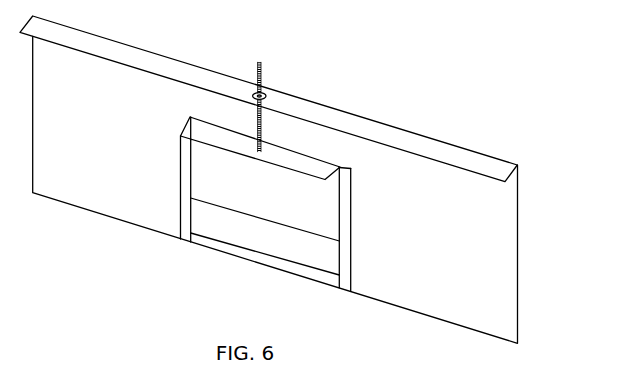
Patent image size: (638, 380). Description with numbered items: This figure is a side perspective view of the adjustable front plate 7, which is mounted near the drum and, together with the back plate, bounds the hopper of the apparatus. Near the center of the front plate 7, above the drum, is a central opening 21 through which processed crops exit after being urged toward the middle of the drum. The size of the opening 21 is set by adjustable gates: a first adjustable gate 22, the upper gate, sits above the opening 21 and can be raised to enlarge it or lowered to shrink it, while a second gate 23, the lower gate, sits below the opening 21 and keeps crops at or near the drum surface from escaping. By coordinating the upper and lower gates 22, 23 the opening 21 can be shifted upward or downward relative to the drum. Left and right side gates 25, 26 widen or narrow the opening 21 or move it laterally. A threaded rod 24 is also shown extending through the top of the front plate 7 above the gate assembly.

The front plate 7 is at (488, 222).
The central opening 21 is at (303, 243).
The first adjustable gate 22 is at (325, 195).
The second gate 23 is at (253, 257).
The threaded rod 24 is at (262, 123).
The left side gate 25 is at (185, 175).
The right side gate 26 is at (347, 232).